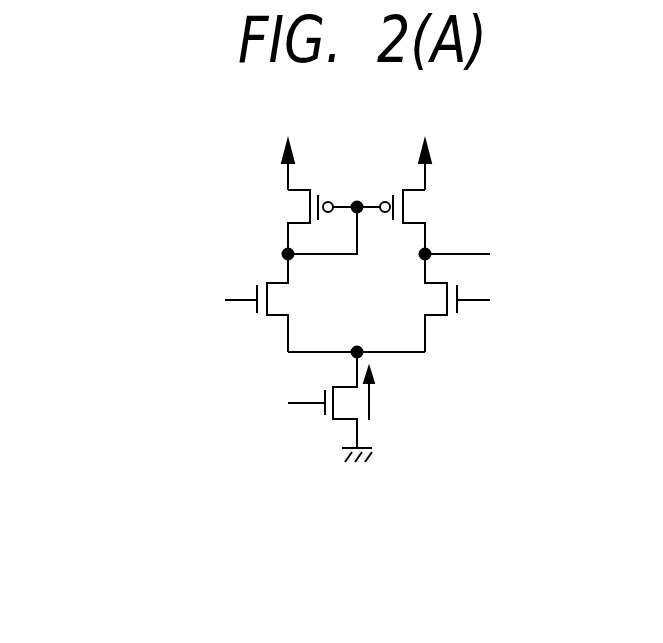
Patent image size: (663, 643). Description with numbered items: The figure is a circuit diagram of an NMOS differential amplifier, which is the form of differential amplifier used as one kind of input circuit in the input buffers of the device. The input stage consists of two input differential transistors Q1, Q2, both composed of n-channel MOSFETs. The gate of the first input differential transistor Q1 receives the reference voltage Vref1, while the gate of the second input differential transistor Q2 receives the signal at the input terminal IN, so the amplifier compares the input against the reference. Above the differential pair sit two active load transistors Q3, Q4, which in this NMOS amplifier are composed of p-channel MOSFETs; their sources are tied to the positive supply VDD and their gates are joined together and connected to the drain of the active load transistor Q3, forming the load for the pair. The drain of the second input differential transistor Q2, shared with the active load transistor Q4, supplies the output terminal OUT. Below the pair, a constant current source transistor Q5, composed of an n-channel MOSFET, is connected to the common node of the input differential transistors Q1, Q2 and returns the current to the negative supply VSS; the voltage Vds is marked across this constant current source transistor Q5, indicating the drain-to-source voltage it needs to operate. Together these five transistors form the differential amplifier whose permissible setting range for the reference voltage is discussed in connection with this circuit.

The input differential transistor Q1 is at (266, 304).
The input differential transistor Q2 is at (445, 304).
The active load transistor Q3 is at (302, 222).
The active load transistor Q4 is at (410, 222).
The constant current source transistor Q5 is at (322, 402).
The power supply voltage VDD is at (356, 149).
The ground voltage VSS is at (356, 476).
The output terminal OUT is at (486, 255).
The input terminal IN is at (490, 298).
The reference voltage input Vref1 is at (158, 298).
The drain-source voltage Vds is at (394, 393).